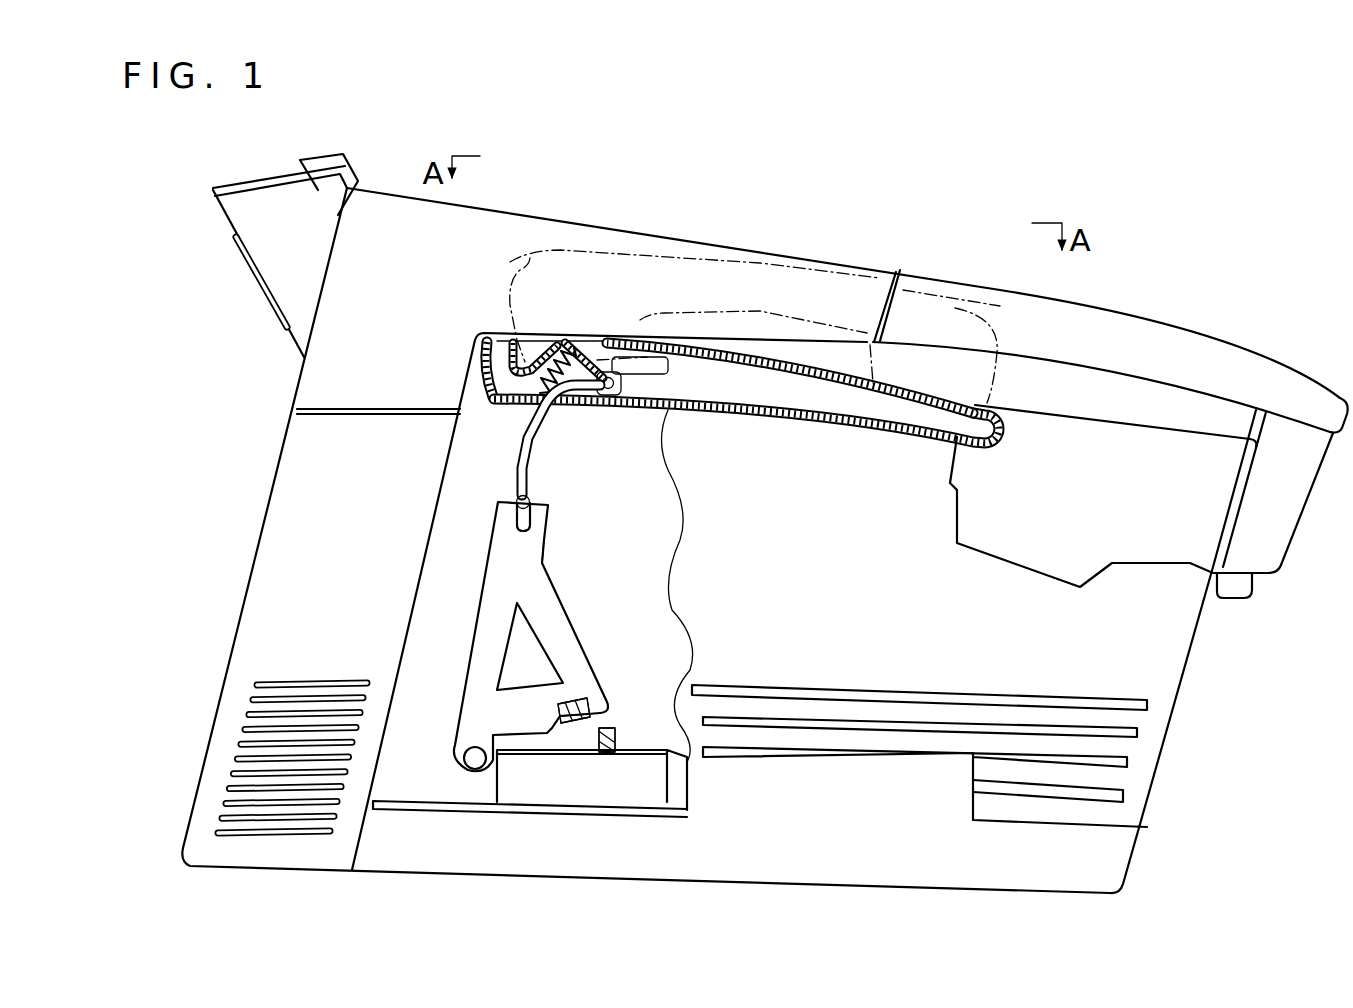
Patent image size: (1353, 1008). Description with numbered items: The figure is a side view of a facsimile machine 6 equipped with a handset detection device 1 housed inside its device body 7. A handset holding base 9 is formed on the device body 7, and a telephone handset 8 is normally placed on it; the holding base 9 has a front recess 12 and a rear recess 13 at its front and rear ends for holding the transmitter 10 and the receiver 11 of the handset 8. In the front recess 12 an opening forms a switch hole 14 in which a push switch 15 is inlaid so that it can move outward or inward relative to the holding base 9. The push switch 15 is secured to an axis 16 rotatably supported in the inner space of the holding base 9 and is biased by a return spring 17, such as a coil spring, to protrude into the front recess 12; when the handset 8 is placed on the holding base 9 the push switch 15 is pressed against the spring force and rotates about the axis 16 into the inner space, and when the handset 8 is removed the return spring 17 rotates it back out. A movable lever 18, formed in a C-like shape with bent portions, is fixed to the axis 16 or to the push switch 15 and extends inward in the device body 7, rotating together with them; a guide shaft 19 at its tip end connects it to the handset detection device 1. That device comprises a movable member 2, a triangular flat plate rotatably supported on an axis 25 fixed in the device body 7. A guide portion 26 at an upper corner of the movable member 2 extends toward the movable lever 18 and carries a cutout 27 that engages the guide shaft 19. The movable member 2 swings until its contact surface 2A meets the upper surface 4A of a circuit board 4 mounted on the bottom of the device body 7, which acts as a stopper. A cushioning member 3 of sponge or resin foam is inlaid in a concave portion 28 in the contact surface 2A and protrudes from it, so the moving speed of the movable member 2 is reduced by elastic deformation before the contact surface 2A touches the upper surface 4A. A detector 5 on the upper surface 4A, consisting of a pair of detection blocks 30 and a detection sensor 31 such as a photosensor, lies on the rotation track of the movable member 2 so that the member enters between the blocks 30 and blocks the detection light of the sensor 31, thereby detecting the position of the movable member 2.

The handset detection device 1 is at (192, 492).
The movable member 2 is at (516, 545).
The contact surface 2A is at (618, 714).
The cushioning member 3 is at (553, 711).
The circuit board 4 is at (508, 781).
The upper surface 4A is at (643, 748).
The detector 5 is at (595, 738).
The facsimile machine 6 is at (596, 205).
The device body 7 is at (370, 224).
The telephone handset 8 is at (793, 270).
The handset holding base 9 is at (795, 408).
The transmitter 10 is at (972, 370).
The receiver 11 is at (530, 258).
The front recess 12 is at (528, 355).
The rear recess 13 is at (950, 437).
The switch hole 14 is at (522, 397).
The push switch 15 is at (592, 348).
The axis 16 is at (610, 394).
The return spring 17 is at (561, 340).
The movable lever 18 is at (538, 440).
The guide shaft 19 is at (533, 502).
The axis 25 is at (505, 768).
The guide portion 26 is at (541, 540).
The cutout 27 is at (532, 514).
The concave portion 28 is at (573, 700).
The detection block 30 is at (610, 750).
The detection sensor 31 is at (617, 752).